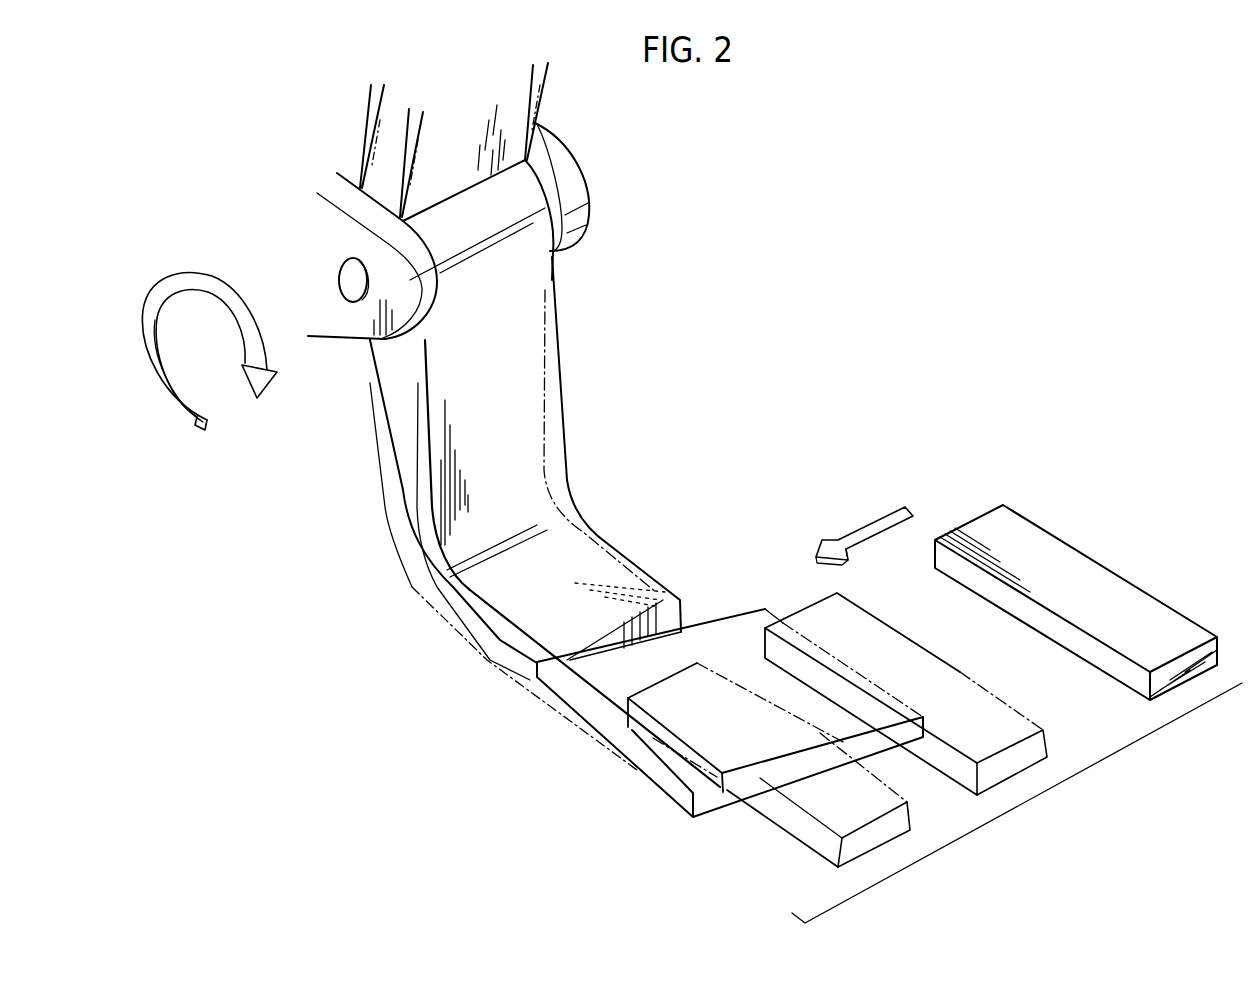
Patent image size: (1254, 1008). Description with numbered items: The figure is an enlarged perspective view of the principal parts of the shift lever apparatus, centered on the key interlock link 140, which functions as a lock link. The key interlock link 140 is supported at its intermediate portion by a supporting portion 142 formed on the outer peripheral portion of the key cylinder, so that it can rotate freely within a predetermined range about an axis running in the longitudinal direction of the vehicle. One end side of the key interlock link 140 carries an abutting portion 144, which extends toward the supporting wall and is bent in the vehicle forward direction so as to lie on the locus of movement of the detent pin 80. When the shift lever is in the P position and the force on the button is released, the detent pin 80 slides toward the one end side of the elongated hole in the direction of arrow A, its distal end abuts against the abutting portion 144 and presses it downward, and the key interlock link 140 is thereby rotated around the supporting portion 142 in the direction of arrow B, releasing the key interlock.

The key interlock link 140 is at (594, 345).
The supporting portion 142 is at (350, 322).
The abutting portion 144 is at (735, 633).
The detent pin 80 is at (1027, 525).
The arrow A is at (845, 533).
The arrow B is at (180, 413).